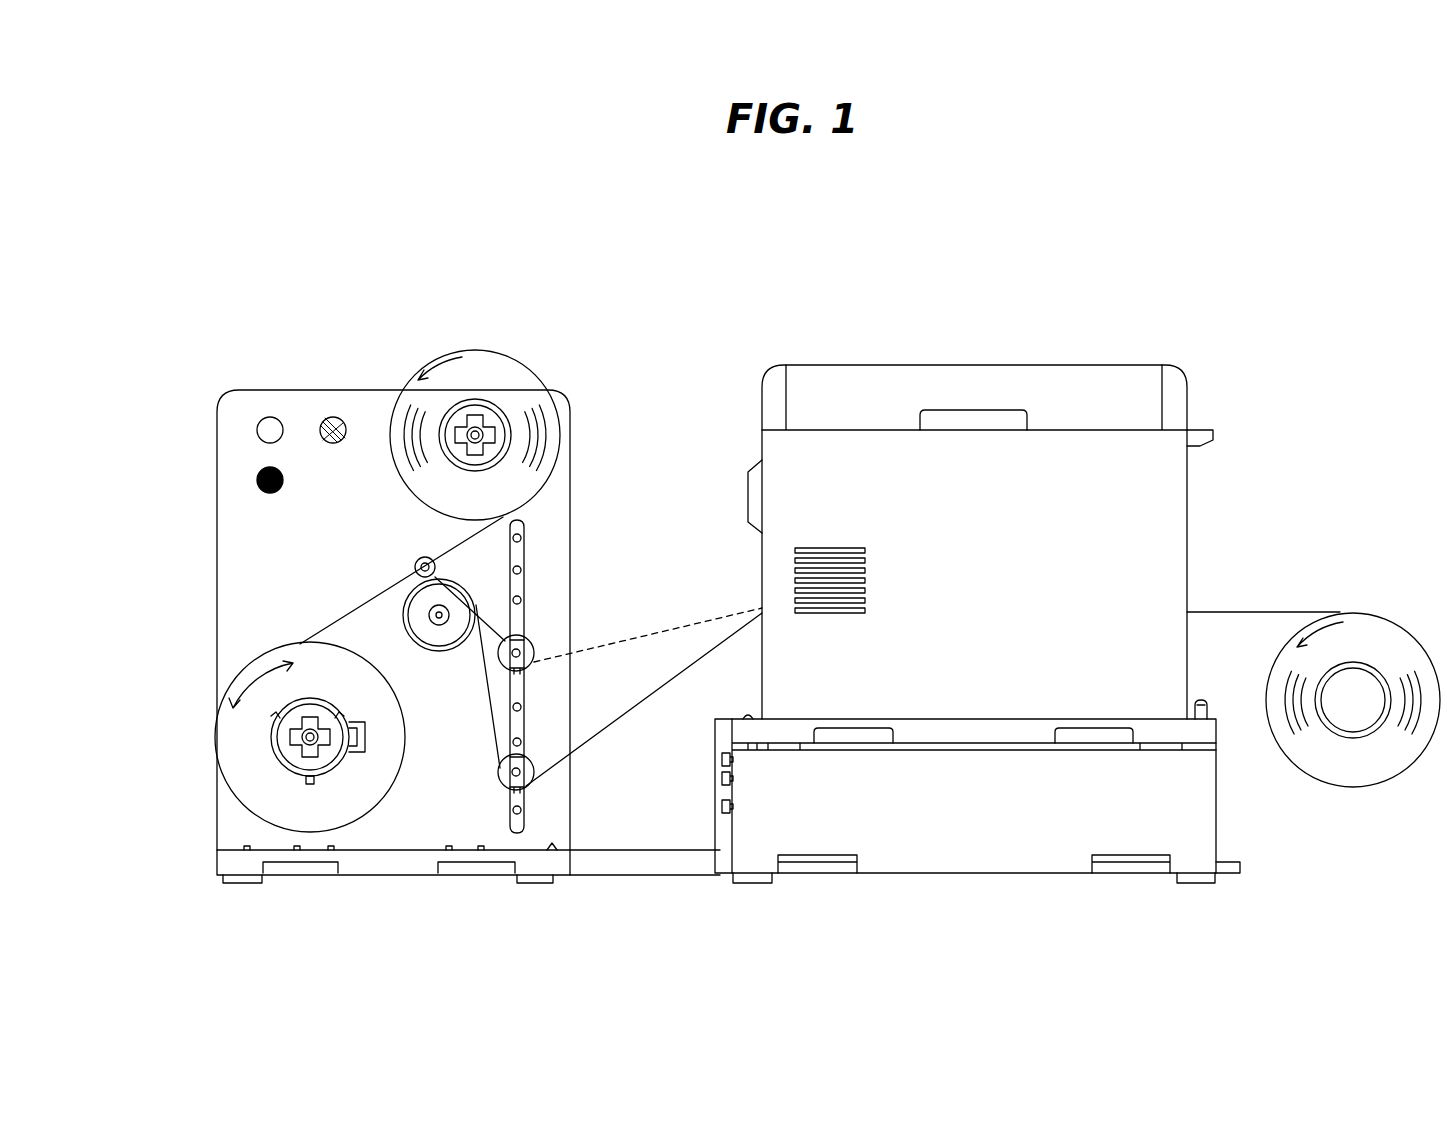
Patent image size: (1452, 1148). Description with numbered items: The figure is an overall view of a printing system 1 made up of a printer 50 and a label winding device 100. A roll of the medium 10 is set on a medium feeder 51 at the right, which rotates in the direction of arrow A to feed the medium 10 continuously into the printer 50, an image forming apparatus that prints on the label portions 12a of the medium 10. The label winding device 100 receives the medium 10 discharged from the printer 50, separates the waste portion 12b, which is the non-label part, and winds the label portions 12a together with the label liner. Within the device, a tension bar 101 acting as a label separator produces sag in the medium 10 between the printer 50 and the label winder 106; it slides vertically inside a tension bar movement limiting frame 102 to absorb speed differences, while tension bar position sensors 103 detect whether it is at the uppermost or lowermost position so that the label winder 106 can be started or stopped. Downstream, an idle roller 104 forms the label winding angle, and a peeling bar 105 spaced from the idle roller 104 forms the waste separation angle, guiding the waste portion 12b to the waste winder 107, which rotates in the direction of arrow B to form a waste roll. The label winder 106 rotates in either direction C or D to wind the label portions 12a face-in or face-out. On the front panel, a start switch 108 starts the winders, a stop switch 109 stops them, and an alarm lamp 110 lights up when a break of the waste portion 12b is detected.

The printing system 1 is at (908, 247).
The medium 10 is at (667, 678).
The label portions 12a is at (333, 628).
The waste portion 12b is at (437, 540).
The printer 50 is at (1073, 397).
The medium feeder 51 is at (1378, 668).
The label winding device 100 is at (607, 317).
The tension bar 101 is at (527, 612).
The tension bar movement limiting frame 102 is at (515, 723).
The tension bar position sensors 103 is at (507, 773).
The idle roller 104 is at (422, 608).
The peeling bar 105 is at (415, 565).
The label winder 106 is at (283, 773).
The waste winder 107 is at (470, 398).
The start switch 108 is at (257, 425).
The stop switch 109 is at (257, 480).
The alarm lamp 110 is at (333, 415).